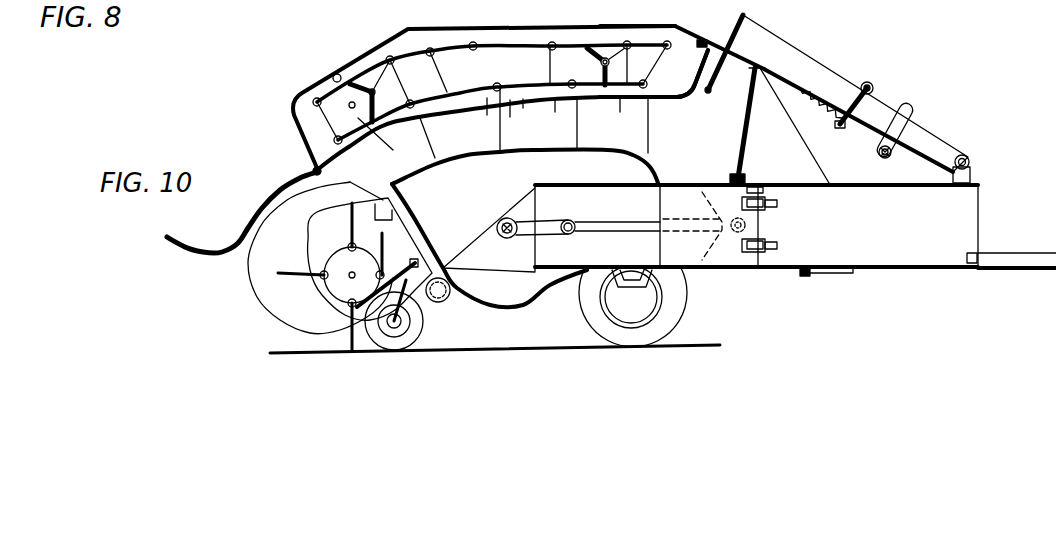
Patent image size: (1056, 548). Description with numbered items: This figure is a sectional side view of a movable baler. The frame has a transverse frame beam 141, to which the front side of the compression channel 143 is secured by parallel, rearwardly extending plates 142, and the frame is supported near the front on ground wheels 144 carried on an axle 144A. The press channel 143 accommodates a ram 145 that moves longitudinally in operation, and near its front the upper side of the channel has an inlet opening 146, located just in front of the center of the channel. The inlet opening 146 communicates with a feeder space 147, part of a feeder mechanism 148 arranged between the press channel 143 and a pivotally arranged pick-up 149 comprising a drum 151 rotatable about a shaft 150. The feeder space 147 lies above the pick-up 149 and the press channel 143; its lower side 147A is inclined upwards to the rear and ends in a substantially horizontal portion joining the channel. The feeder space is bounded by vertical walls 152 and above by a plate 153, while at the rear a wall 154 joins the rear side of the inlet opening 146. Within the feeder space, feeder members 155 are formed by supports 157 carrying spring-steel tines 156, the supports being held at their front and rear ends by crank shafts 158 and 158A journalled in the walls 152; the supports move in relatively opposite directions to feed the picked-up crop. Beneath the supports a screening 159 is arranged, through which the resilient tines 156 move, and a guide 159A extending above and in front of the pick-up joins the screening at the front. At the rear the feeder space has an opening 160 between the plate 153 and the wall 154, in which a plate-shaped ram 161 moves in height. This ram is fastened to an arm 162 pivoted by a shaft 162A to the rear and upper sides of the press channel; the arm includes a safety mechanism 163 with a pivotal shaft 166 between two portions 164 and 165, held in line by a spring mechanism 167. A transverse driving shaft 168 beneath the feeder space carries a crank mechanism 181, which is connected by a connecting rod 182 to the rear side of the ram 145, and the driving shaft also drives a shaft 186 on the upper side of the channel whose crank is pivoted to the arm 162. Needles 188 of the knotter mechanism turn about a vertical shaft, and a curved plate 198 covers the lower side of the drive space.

The frame beam 141 is at (443, 302).
The plates 142 is at (470, 251).
The compression channel 143 is at (905, 268).
The ground wheels 144 is at (680, 338).
The axle 144A is at (630, 288).
The ram 145 is at (758, 266).
The inlet opening 146 is at (690, 182).
The feeder space 147 is at (490, 154).
The lower side of the feeder space 147A is at (537, 152).
The feeder mechanism 148 is at (449, 25).
The pick-up 149 is at (317, 317).
The shaft 150 is at (351, 278).
The drum 151 is at (320, 278).
The vertical walls 152 is at (818, 166).
The plate 153 is at (648, 24).
The wall 154 is at (741, 150).
The feeder members 155 is at (511, 38).
The spring-steel tines 156 is at (388, 140).
The supports 157 is at (513, 77).
The crank shaft 158 is at (350, 65).
The crank shaft 158A is at (592, 43).
The screening 159 is at (683, 98).
The guide 159A is at (210, 255).
The opening 160 is at (723, 40).
The plate-shaped ram 161 is at (712, 86).
The arm 162 is at (770, 31).
The shaft 162A is at (970, 160).
The safety mechanism 163 is at (838, 127).
The portion of the arm 164 is at (809, 54).
The portion of the arm 165 is at (923, 132).
The pivotal shaft 166 is at (871, 87).
The spring mechanism 167 is at (838, 112).
The driving shaft 168 is at (498, 224).
The crank mechanism 181 is at (527, 238).
The piston rod 182 is at (603, 231).
The shaft 186 is at (889, 155).
The needles 188 is at (777, 243).
The curved plate 198 is at (522, 308).